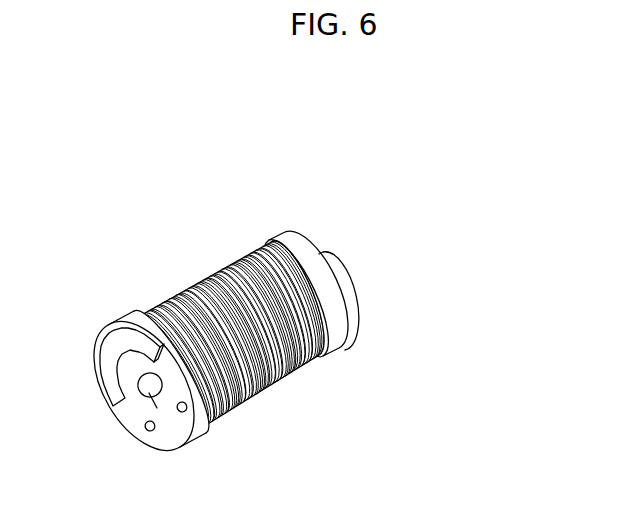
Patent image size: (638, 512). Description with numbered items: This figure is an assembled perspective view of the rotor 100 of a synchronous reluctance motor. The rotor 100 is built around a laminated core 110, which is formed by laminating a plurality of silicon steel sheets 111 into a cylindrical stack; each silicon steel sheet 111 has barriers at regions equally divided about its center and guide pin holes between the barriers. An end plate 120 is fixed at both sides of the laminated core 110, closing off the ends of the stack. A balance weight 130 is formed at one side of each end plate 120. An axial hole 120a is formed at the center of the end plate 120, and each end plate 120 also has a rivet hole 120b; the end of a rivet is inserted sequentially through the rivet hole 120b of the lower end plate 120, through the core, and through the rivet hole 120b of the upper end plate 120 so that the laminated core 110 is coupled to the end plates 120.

The rotor of a synchronous reluctance motor 100 is at (86, 146).
The laminated core 110 is at (230, 255).
The silicon steel sheet 111 is at (150, 314).
The end plate 120 is at (118, 332).
The axial hole 120a is at (190, 432).
The rivet hole 120b is at (150, 431).
The balance weight 130 is at (114, 335).